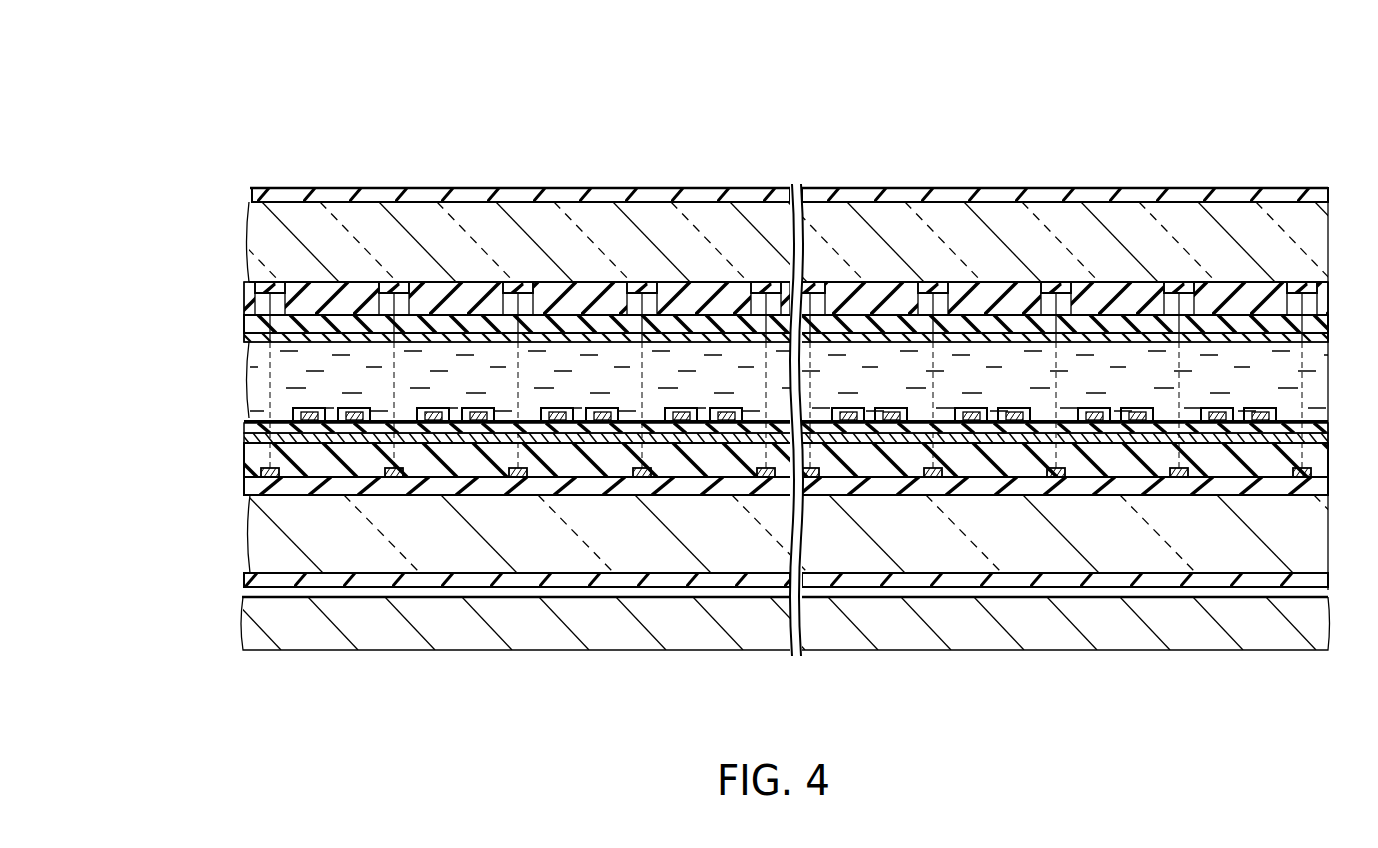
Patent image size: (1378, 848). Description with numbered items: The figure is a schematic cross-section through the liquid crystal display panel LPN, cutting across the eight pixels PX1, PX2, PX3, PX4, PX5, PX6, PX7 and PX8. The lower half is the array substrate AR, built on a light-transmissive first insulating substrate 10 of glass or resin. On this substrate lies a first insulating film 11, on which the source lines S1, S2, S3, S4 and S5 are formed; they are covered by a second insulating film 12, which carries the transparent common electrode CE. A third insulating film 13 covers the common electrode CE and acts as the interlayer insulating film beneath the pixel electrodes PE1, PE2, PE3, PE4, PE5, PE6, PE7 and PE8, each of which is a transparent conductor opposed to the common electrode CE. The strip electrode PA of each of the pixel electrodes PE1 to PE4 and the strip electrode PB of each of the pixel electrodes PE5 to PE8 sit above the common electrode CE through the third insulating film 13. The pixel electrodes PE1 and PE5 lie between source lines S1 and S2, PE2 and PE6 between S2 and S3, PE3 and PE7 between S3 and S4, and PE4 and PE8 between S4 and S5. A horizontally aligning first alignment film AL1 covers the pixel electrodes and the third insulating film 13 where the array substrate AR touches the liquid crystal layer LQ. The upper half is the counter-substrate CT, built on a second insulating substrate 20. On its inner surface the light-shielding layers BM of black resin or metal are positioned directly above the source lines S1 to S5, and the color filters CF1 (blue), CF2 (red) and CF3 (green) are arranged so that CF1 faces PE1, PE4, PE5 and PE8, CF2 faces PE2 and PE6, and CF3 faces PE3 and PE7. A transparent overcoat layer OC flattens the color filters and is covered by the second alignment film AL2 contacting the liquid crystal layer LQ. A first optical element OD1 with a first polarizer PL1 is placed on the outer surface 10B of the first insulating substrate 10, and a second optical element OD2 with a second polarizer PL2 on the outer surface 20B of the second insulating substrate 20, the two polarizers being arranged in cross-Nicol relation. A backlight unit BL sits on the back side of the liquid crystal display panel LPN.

The second insulating substrate 20 is at (258, 244).
The outer surface of the second insulating substrate 20B is at (270, 186).
The second optical element OD2 is at (254, 198).
The second polarizer PL2 is at (790, 195).
The counter-substrate CT is at (238, 272).
The color filter CF1 is at (320, 282).
The color filter CF2 is at (485, 282).
The color filter CF3 is at (600, 282).
The light-shielding layer BM is at (271, 284).
The overcoat layer OC is at (250, 324).
The second alignment film AL2 is at (250, 338).
The liquid crystal layer LQ is at (250, 372).
The first alignment film AL1 is at (250, 419).
The third insulating film 13 is at (250, 428).
The common electrode CE is at (250, 438).
The second insulating film 12 is at (250, 459).
The first insulating film 11 is at (250, 486).
The array substrate AR is at (238, 518).
The first insulating substrate 10 is at (258, 540).
The first optical element OD1 is at (250, 580).
The first polarizer PL1 is at (786, 580).
The outer surface of the first insulating substrate 10B is at (286, 596).
The backlight unit BL is at (255, 632).
The strip electrode PA is at (517, 568).
The strip electrode PB is at (1054, 568).
The pixel electrode PE1 is at (309, 421).
The pixel electrode PE2 is at (433, 421).
The pixel electrode PE3 is at (557, 421).
The pixel electrode PE4 is at (681, 421).
The pixel electrode PE5 is at (848, 421).
The pixel electrode PE6 is at (971, 421).
The pixel electrode PE7 is at (1094, 421).
The pixel electrode PE8 is at (1217, 421).
The source line S1 is at (270, 478).
The source line S2 is at (394, 478).
The source line S3 is at (518, 478).
The source line S4 is at (642, 478).
The source line S5 is at (766, 478).
The pixel PX1 is at (365, 178).
The pixel PX2 is at (458, 178).
The pixel PX3 is at (575, 178).
The pixel PX4 is at (737, 178).
The pixel PX5 is at (905, 178).
The pixel PX6 is at (997, 178).
The pixel PX7 is at (1120, 178).
The pixel PX8 is at (1290, 178).
The liquid crystal display panel LPN is at (1228, 176).